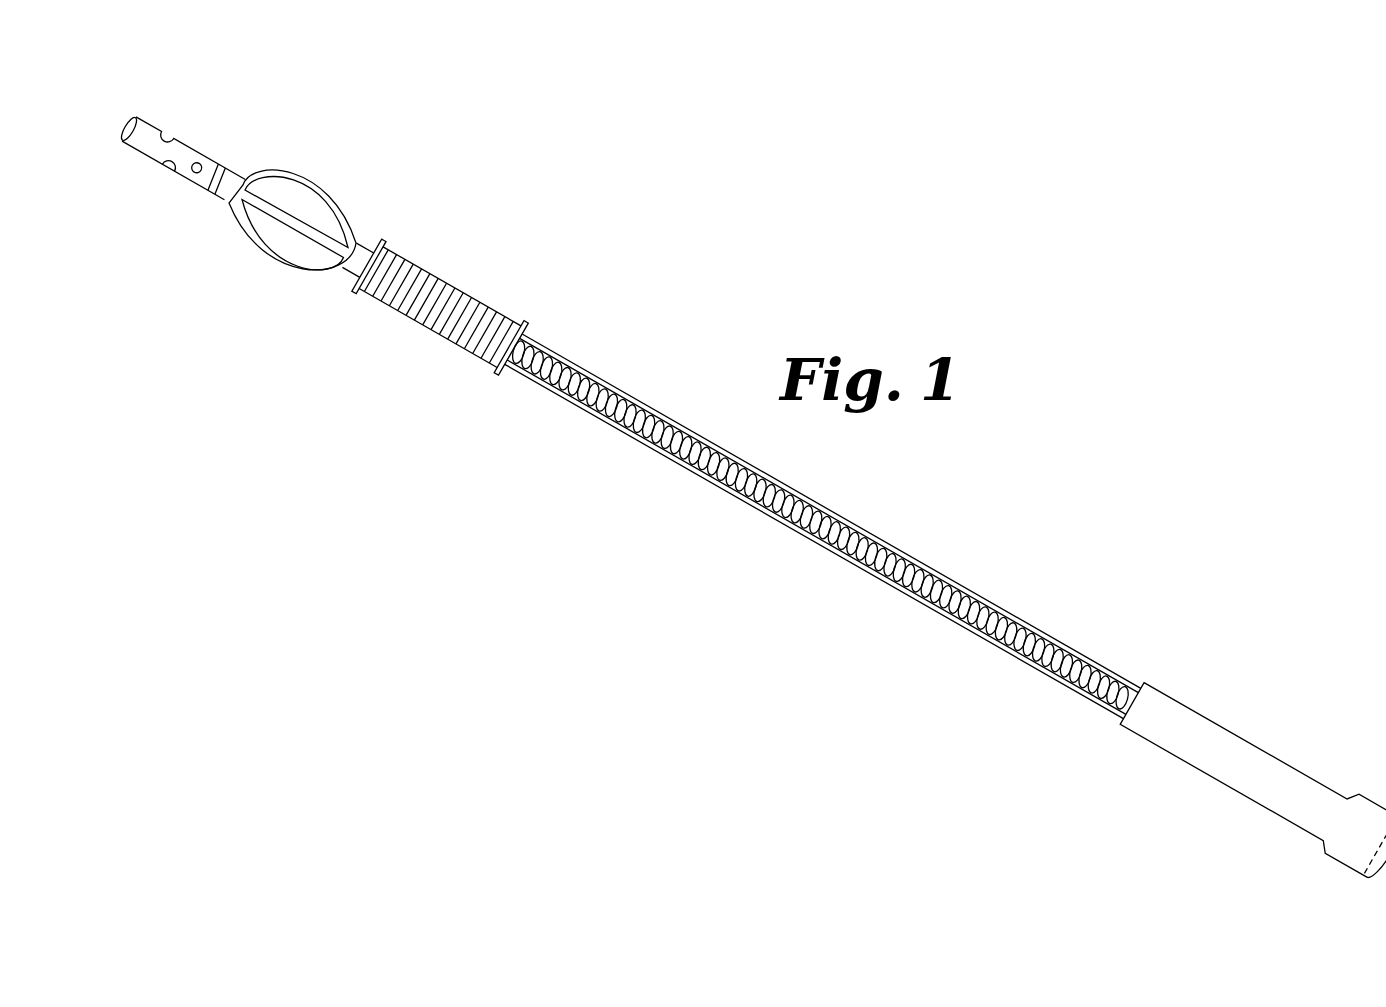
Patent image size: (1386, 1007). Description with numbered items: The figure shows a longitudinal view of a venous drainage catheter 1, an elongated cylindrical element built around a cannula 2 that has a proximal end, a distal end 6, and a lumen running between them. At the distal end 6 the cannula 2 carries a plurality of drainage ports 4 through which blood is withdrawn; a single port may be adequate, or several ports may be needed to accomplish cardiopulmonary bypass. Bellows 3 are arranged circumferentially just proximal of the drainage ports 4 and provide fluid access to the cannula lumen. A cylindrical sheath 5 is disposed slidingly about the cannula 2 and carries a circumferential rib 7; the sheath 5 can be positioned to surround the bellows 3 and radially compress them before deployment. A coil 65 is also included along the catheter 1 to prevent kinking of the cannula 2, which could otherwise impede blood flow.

The venous drainage catheter 1 is at (926, 514).
The cannula 2 is at (752, 504).
The bellows 3 is at (298, 173).
The drainage ports 4 is at (171, 166).
The cylindrical sheath 5 is at (452, 288).
The distal end 6 is at (124, 124).
The circumferential rib 7 is at (355, 291).
The coil 65 is at (895, 582).